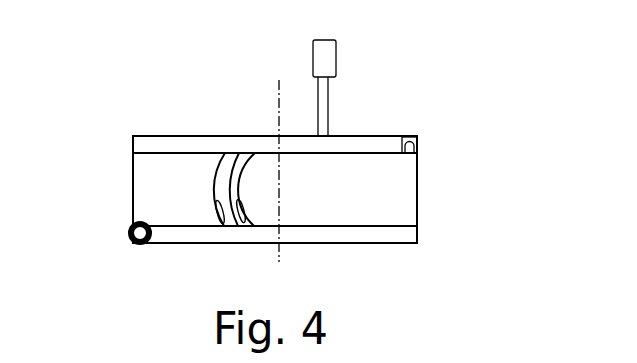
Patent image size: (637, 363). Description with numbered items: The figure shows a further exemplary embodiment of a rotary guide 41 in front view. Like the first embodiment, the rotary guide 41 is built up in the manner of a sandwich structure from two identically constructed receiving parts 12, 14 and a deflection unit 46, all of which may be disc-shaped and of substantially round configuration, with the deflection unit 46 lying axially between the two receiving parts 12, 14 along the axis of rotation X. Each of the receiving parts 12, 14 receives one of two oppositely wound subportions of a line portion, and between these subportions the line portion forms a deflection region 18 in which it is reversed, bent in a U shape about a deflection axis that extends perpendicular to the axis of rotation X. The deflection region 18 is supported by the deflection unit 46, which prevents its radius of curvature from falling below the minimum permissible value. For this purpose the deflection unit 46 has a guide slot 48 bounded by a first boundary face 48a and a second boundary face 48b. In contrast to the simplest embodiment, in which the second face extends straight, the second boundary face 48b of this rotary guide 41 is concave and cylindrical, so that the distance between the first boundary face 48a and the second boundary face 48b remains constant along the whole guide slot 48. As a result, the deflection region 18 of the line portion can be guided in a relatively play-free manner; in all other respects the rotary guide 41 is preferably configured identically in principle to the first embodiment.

The rotary guide 41 is at (152, 87).
The guide slot 48 is at (235, 153).
The first boundary face of the guide slot 48a is at (238, 210).
The second boundary face of the guide slot 48b is at (226, 208).
The deflection region 18 is at (255, 153).
The receiving part 12 is at (378, 146).
The deflection unit 46 is at (396, 182).
The receiving part 14 is at (407, 232).
The axis of rotation X is at (281, 248).